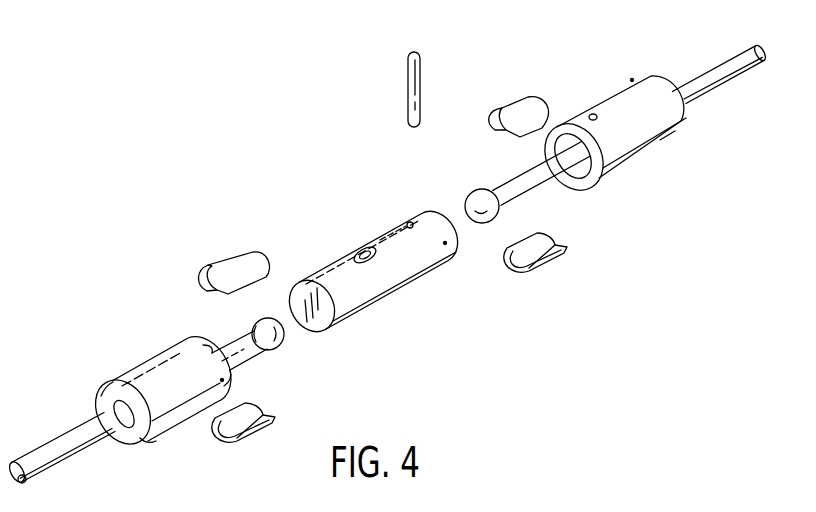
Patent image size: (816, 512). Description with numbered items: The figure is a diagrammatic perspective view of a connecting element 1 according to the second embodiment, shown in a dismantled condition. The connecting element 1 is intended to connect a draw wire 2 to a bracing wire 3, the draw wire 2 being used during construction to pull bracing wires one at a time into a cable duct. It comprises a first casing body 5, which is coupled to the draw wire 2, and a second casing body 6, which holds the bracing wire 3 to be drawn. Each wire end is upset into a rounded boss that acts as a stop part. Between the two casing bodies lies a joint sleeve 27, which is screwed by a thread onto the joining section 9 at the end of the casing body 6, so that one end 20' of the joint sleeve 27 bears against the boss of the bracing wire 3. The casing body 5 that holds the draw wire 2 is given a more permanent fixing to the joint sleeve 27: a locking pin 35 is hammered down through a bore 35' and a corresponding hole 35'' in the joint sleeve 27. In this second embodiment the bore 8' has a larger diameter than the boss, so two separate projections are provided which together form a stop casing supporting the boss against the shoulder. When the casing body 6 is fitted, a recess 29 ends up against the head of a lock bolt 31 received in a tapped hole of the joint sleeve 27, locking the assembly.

The connecting element 1 is at (180, 240).
The draw wire 2 is at (717, 57).
The bracing wire 3 is at (68, 428).
The first casing body 5 is at (633, 80).
The second casing body 6 is at (157, 357).
The bore 8' is at (96, 380).
The joining section 9 is at (441, 296).
The end of the joint sleeve 20' is at (327, 329).
The joint sleeve 27 is at (387, 300).
The recess 29 is at (211, 342).
The lock bolt 31 is at (368, 231).
The locking pin 35 is at (429, 79).
The bore 35' is at (595, 89).
The hole 35'' is at (403, 209).